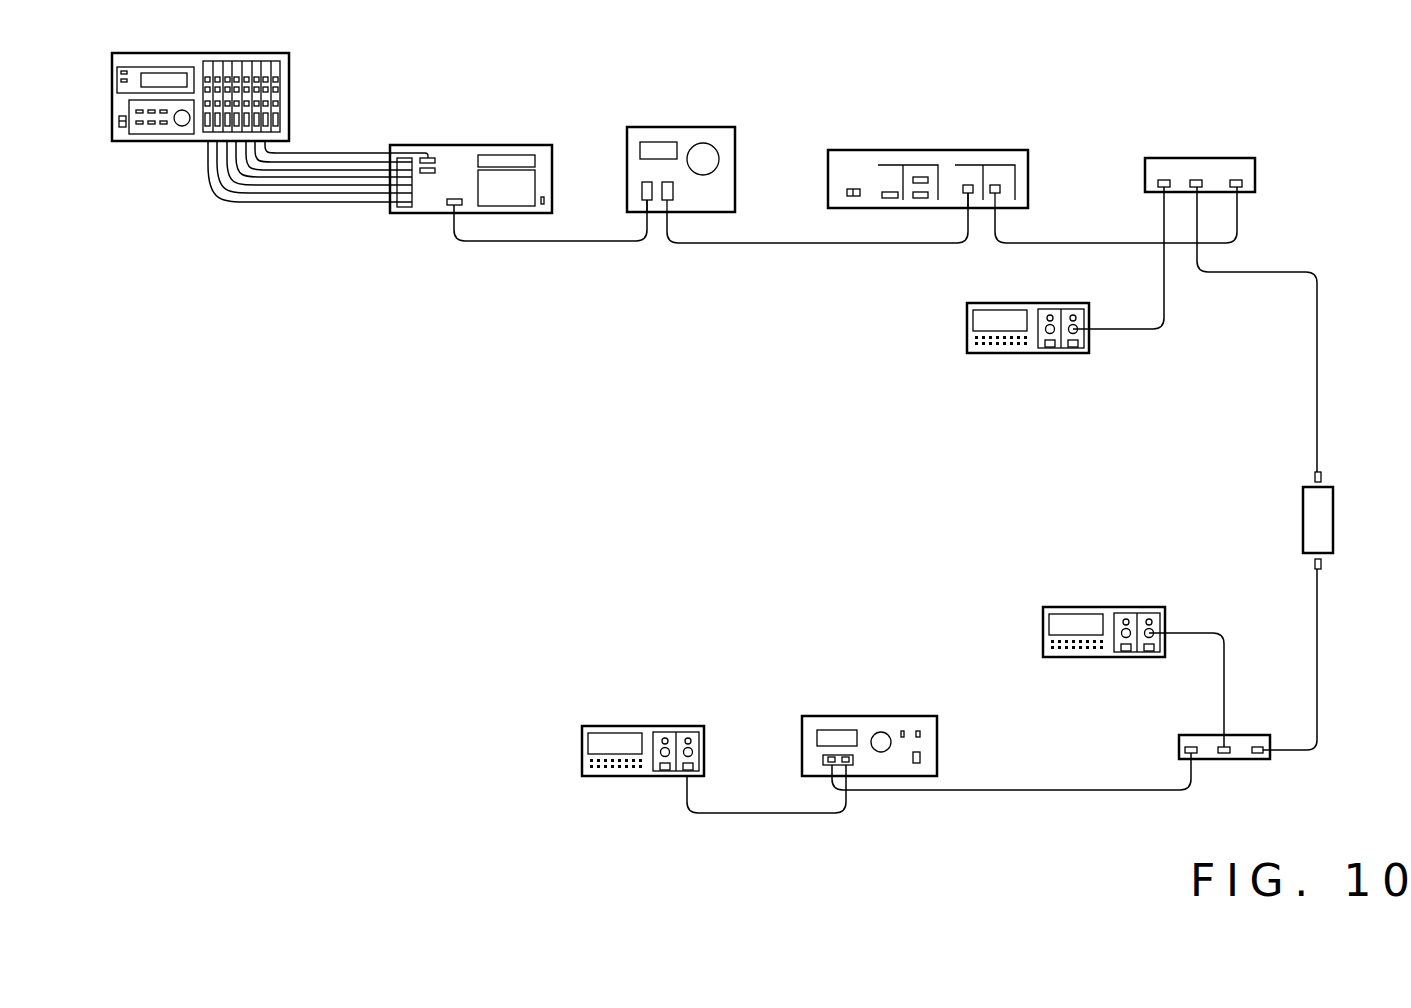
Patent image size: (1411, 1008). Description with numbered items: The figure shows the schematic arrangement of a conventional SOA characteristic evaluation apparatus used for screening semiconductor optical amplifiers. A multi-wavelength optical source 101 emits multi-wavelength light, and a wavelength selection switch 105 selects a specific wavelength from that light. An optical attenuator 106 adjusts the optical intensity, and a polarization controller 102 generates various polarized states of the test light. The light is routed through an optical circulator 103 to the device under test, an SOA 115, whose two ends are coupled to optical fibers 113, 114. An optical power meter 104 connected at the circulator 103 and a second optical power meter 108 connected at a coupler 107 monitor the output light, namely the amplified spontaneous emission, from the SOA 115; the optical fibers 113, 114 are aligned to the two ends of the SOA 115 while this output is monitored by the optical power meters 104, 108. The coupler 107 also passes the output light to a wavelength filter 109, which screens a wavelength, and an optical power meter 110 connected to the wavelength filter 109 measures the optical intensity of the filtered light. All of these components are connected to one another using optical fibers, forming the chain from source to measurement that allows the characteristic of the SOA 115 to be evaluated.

The multi-wavelength optical source 101 is at (289, 73).
The polarization controller 102 is at (1000, 150).
The optical circulator 103 is at (1232, 157).
The optical power meter 104 is at (973, 352).
The wavelength selection switch 105 is at (475, 143).
The optical attenuator 106 is at (712, 125).
The coupler 107 is at (1252, 735).
The optical power meter 108 is at (1136, 607).
The wavelength filter 109 is at (892, 716).
The optical power meter 110 is at (658, 723).
The optical fiber 113 is at (1317, 425).
The optical fiber 114 is at (1317, 588).
The SOA 115 is at (1303, 507).